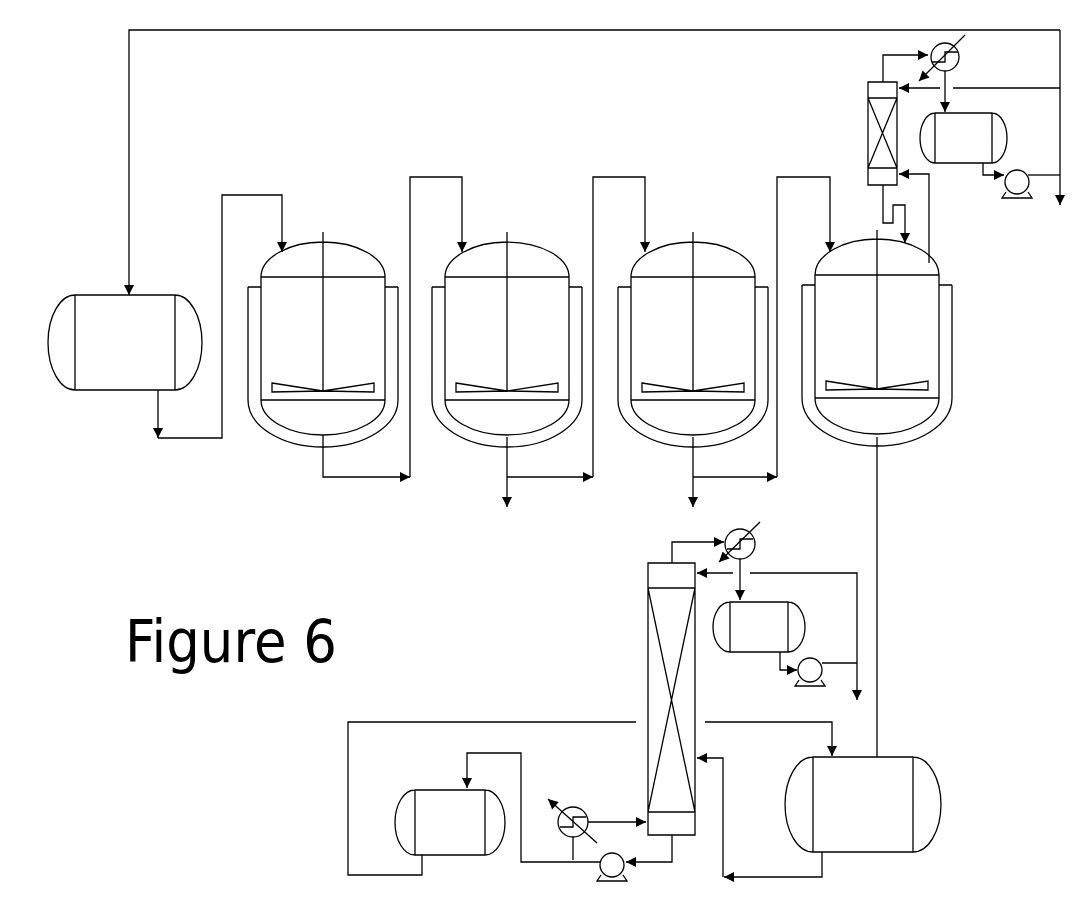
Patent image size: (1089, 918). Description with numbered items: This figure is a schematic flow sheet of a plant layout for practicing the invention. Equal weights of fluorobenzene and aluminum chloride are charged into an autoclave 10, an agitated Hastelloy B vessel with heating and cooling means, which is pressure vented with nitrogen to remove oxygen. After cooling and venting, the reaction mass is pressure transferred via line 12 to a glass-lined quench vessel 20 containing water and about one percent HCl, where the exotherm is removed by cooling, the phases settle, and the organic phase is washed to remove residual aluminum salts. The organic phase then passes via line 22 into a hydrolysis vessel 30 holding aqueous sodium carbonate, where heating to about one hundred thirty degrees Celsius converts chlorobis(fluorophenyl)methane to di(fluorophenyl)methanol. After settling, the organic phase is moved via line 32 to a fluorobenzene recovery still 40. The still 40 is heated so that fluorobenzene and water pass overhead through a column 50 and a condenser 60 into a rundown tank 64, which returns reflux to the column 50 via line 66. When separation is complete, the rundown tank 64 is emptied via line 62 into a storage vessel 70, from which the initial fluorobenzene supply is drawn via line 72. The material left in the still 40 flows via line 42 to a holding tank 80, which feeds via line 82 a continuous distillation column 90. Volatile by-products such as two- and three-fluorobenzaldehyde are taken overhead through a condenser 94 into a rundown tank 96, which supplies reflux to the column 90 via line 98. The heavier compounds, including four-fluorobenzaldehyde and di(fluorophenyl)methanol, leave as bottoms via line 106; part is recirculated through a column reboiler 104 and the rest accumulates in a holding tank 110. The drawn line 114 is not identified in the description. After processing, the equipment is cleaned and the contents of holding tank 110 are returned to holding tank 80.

The autoclave 10 is at (271, 309).
The line 12 is at (344, 476).
The quench vessel 20 is at (455, 309).
The line 22 is at (529, 476).
The hydrolysis vessel 30 is at (641, 309).
The line 32 is at (726, 476).
The fluorobenzene recovery still 40 is at (825, 307).
The line 42 is at (879, 570).
The column 50 is at (868, 137).
The condenser 60 is at (960, 66).
The line 62 is at (582, 31).
The rundown tank 64 is at (951, 149).
The line 66 is at (1015, 89).
The storage vessel 70 is at (83, 326).
The line 72 is at (220, 440).
The holding tank 80 is at (821, 787).
The line 82 is at (790, 875).
The continuous distillation column 90 is at (659, 621).
The condenser 94 is at (756, 548).
The rundown tank 96 is at (747, 637).
The line 98 is at (806, 575).
The column reboiler 104 is at (586, 812).
The line 106 is at (673, 847).
The holding tank 110 is at (427, 821).
The overhead line 114 is at (570, 720).